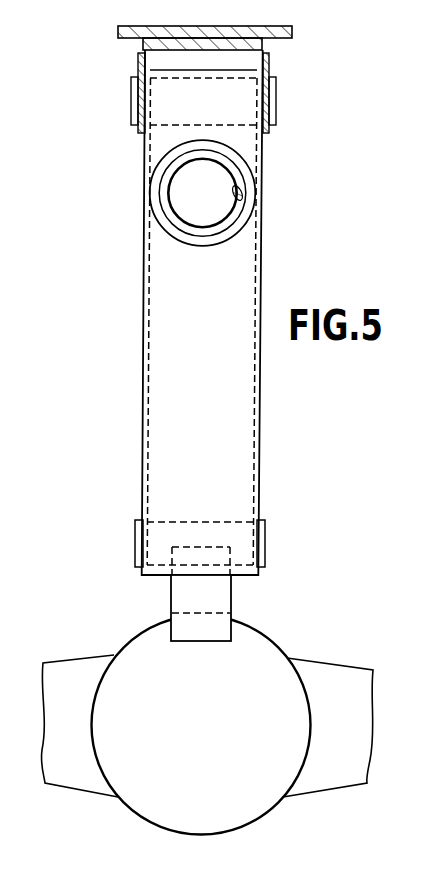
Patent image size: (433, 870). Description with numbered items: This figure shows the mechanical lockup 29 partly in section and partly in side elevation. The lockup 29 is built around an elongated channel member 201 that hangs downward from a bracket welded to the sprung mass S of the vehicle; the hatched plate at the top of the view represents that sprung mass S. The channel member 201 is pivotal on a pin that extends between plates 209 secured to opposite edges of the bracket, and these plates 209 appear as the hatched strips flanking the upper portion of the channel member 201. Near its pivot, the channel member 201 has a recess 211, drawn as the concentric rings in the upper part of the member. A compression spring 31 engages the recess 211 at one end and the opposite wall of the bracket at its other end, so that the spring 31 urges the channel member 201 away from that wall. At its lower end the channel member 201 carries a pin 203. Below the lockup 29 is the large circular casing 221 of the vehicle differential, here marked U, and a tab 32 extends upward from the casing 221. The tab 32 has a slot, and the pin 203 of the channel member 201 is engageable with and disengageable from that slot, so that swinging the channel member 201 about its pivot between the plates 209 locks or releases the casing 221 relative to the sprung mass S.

The sprung mass S is at (217, 26).
The unit U is at (208, 731).
The mechanical lockup 29 is at (218, 358).
The compression spring 31 is at (180, 210).
The tab 32 is at (228, 597).
The channel member 201 is at (247, 403).
The pin 203 is at (265, 545).
The plates 209 is at (138, 70).
The recess 211 is at (220, 246).
The casing 221 is at (310, 724).